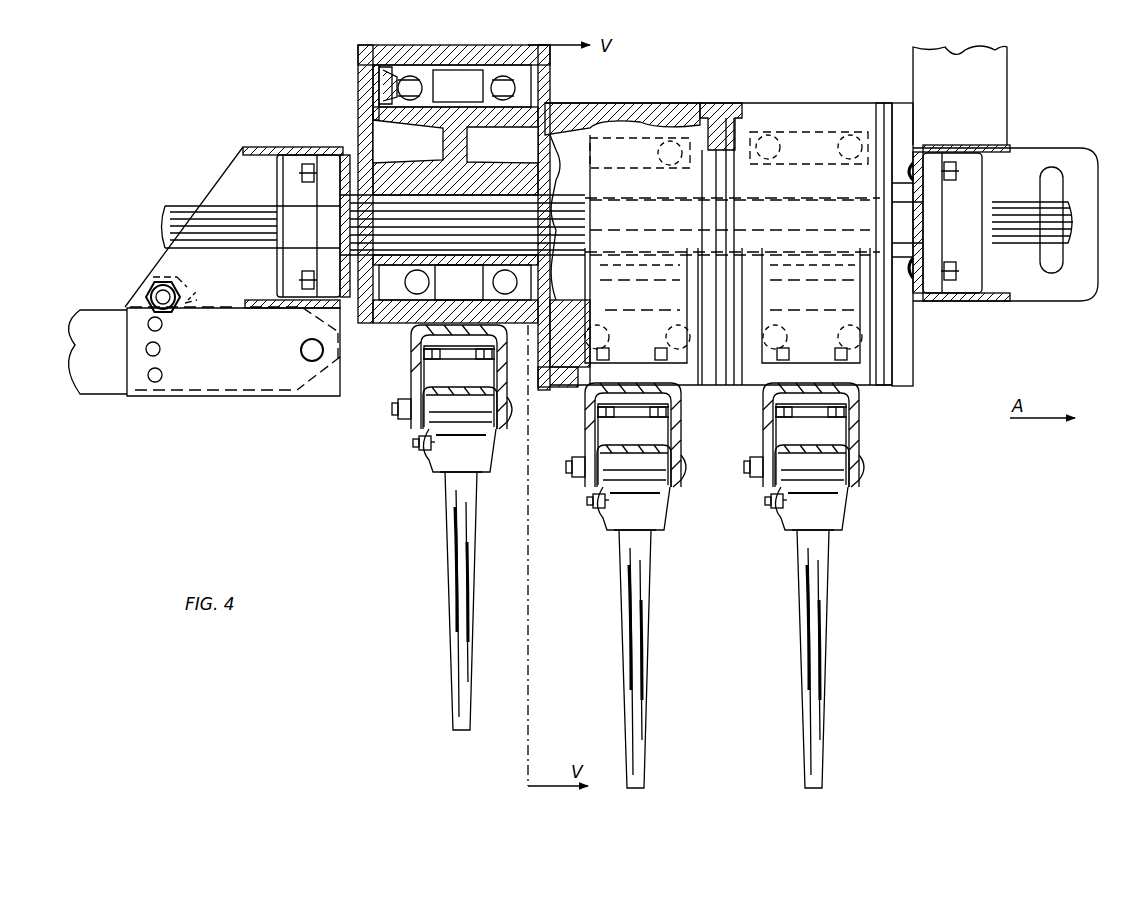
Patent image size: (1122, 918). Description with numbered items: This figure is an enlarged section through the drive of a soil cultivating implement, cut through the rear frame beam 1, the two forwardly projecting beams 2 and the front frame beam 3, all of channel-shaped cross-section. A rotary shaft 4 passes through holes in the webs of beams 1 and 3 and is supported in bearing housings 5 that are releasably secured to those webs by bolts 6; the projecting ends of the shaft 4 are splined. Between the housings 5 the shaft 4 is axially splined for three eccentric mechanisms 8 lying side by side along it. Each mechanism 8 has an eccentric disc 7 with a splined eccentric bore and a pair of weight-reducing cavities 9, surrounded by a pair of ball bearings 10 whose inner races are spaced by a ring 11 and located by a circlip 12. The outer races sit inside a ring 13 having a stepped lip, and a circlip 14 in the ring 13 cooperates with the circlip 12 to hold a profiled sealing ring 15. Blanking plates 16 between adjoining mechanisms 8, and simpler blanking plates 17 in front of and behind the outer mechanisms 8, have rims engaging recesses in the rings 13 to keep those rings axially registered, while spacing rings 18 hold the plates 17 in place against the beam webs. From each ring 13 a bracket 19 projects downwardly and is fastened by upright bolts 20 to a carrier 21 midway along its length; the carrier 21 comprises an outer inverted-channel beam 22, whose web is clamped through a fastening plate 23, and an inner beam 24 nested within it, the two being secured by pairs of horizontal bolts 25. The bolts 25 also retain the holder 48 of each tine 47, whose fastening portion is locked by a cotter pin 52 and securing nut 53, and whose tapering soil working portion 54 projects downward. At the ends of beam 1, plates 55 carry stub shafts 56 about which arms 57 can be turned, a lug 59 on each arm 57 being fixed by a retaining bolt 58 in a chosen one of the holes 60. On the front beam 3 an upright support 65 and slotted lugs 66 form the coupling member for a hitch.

The beam 1 is at (258, 147).
The beams 2 is at (902, 145).
The frame beam 3 is at (992, 145).
The rotary shaft 4 is at (188, 206).
The bearing housings 5 is at (279, 182).
The bolts 6 is at (306, 271).
The eccentric disc 7 is at (557, 188).
The eccentric mechanisms 8 is at (356, 63).
The weight-reducing cavities 9 is at (455, 151).
The ball bearings 10 is at (398, 108).
The ring 11 is at (458, 86).
The circlip 12 is at (385, 262).
The ring 13 is at (462, 46).
The circlip 14 is at (360, 70).
The profiled sealing ring 15 is at (345, 102).
The blanking plates 16 is at (544, 85).
The blanking plates 17 is at (358, 112).
The spacing rings 18 is at (367, 323).
The brackets 19 is at (575, 387).
The upright bolts 20 is at (482, 350).
The carrier 21 is at (411, 378).
The beam 22 is at (411, 395).
The fastening plate 23 is at (422, 349).
The second beam 24 is at (440, 394).
The bolts 25 is at (396, 410).
The tines 47 is at (450, 555).
The holder 48 is at (488, 455).
The cotter pin 52 is at (413, 442).
The securing nut 53 is at (428, 455).
The soil working portion 54 is at (455, 645).
The plates 55 is at (220, 396).
The stub shafts 56 is at (305, 358).
The arms 57 is at (103, 394).
The retaining bolts 58 is at (146, 295).
The lug 59 is at (205, 283).
The holes 60 is at (160, 370).
The upright support 65 is at (1005, 85).
The lugs 66 is at (1048, 301).